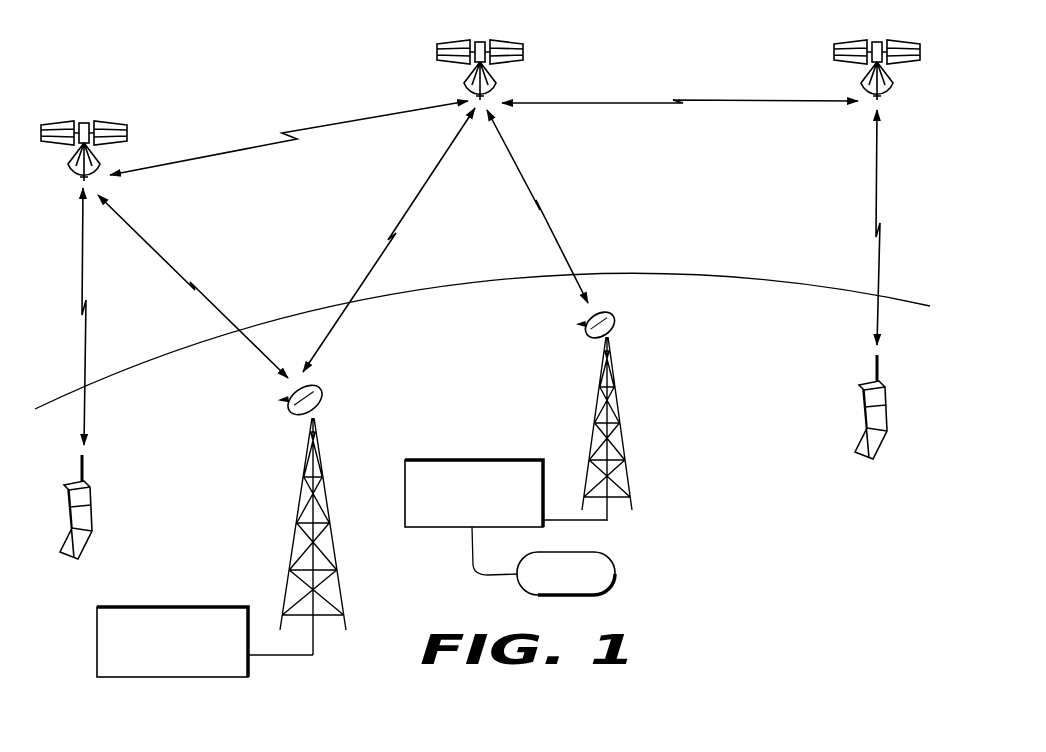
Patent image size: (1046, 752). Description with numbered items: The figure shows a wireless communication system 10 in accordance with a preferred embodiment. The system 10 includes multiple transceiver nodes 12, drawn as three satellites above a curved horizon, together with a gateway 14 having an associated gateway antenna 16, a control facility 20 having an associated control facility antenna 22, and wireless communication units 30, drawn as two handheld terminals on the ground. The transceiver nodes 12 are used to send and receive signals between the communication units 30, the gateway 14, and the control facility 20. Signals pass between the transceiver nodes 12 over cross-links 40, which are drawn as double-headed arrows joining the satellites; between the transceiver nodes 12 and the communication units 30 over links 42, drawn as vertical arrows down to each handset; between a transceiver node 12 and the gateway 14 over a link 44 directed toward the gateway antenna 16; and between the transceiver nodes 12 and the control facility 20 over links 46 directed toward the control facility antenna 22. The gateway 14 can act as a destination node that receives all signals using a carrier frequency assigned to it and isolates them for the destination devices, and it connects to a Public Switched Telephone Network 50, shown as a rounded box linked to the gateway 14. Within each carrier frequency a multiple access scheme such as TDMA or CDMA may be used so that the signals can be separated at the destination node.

The wireless communication system 10 is at (720, 649).
The transceiver node 12 is at (71, 122).
The gateway 14 is at (472, 459).
The gateway antenna 16 is at (626, 437).
The control facility 20 is at (172, 607).
The control facility antenna 22 is at (331, 541).
The wireless communication unit 30 is at (93, 508).
The cross-link 40 is at (201, 160).
The link 42 is at (88, 250).
The link 44 is at (516, 159).
The link 46 is at (147, 245).
The Public Switched Telephone Network 50 is at (616, 556).